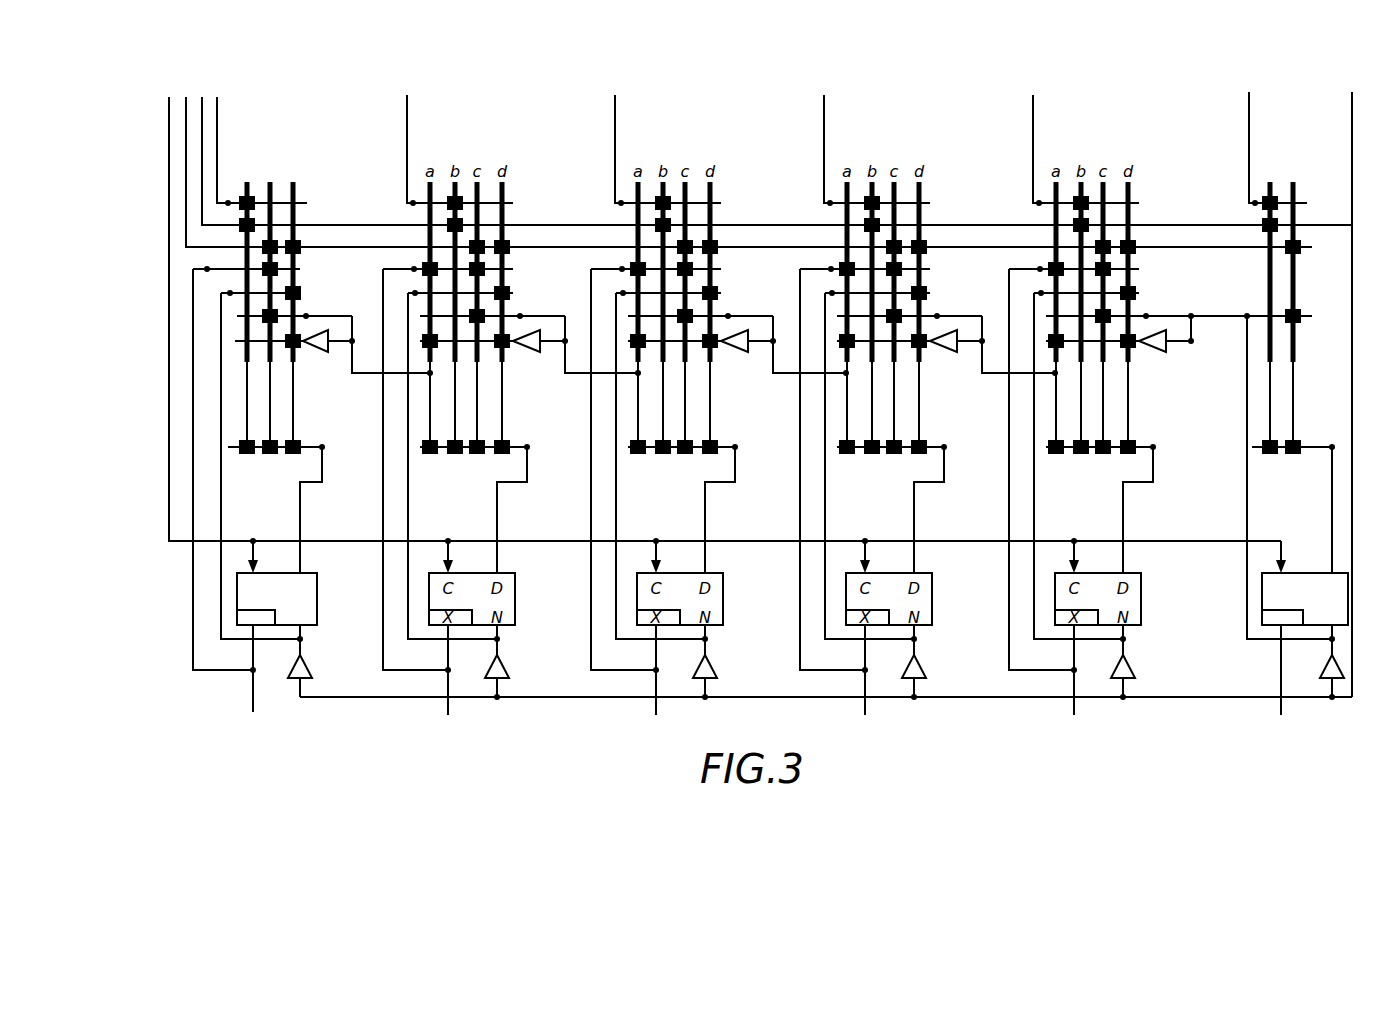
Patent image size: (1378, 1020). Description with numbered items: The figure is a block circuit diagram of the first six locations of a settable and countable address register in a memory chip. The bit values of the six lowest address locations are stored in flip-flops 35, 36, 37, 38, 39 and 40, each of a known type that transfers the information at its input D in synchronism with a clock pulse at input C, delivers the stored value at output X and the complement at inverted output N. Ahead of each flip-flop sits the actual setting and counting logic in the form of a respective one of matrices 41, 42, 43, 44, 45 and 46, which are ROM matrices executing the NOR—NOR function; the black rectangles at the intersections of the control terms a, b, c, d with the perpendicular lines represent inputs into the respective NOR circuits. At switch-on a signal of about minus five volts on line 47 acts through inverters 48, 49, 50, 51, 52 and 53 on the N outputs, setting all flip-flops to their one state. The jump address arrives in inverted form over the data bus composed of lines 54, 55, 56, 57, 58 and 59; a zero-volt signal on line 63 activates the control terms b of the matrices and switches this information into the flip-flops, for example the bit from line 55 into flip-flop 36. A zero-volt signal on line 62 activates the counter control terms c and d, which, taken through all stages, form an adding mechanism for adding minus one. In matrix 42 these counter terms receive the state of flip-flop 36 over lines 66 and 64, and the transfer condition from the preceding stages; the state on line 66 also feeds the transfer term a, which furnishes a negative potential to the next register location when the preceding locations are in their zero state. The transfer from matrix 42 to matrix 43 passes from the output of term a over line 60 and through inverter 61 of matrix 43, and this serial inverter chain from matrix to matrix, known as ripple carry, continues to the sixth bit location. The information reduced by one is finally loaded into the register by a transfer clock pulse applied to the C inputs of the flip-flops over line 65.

The flip-flop 35 is at (1305, 590).
The flip-flop 36 is at (1140, 604).
The flip-flop 37 is at (931, 604).
The flip-flop 38 is at (722, 604).
The flip-flop 39 is at (514, 604).
The flip-flop 40 is at (316, 604).
The matrix 41 is at (1281, 184).
The matrix 42 is at (1101, 182).
The matrix 43 is at (884, 182).
The matrix 44 is at (674, 182).
The matrix 45 is at (466, 182).
The matrix 46 is at (258, 182).
The line 47 is at (1350, 115).
The inverter 48 is at (1326, 672).
The inverter 49 is at (1125, 674).
The inverter 50 is at (920, 674).
The inverter 51 is at (711, 674).
The inverter 52 is at (503, 674).
The inverter 53 is at (306, 674).
The data bus line 54 is at (1248, 124).
The data bus line 55 is at (1035, 108).
The data bus line 56 is at (826, 108).
The data bus line 57 is at (617, 108).
The data bus line 58 is at (409, 108).
The data bus line 59 is at (219, 112).
The line 60 is at (992, 375).
The inverter 61 is at (942, 348).
The line 62 is at (188, 100).
The line 63 is at (204, 104).
The line 64 is at (1034, 496).
The line 65 is at (170, 103).
The line 66 is at (1008, 496).